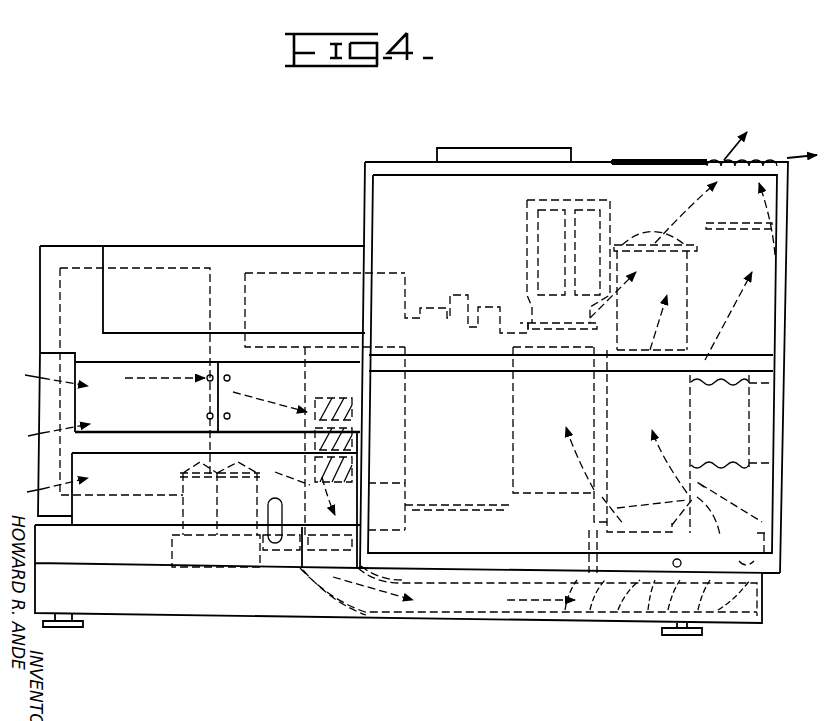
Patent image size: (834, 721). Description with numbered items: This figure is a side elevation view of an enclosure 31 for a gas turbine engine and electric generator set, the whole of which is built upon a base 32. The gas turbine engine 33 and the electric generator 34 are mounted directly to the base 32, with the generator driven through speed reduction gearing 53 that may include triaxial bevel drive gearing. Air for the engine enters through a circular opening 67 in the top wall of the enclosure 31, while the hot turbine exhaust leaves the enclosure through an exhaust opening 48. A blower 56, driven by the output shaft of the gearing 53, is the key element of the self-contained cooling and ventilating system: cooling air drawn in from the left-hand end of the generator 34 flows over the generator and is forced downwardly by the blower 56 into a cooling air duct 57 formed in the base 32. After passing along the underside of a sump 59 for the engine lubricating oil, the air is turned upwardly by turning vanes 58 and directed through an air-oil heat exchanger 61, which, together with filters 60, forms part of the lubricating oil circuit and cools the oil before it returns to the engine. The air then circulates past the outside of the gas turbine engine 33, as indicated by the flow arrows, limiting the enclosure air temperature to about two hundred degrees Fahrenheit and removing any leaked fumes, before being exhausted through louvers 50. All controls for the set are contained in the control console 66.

The enclosure 31 is at (358, 213).
The base 32 is at (762, 596).
The gas turbine engine 33 is at (688, 282).
The electric generator 34 is at (410, 286).
The exhaust opening 48 is at (775, 458).
The louvers 50 is at (750, 163).
The speed reduction gearing 53 is at (516, 306).
The blower 56 is at (345, 378).
The cooling air duct 57 is at (384, 613).
The turning vanes 58 is at (645, 618).
The sump 59 is at (422, 590).
The filters 60 is at (185, 488).
The air-oil heat exchanger 61 is at (776, 563).
The control console 66 is at (178, 246).
The circular opening 67 is at (467, 156).